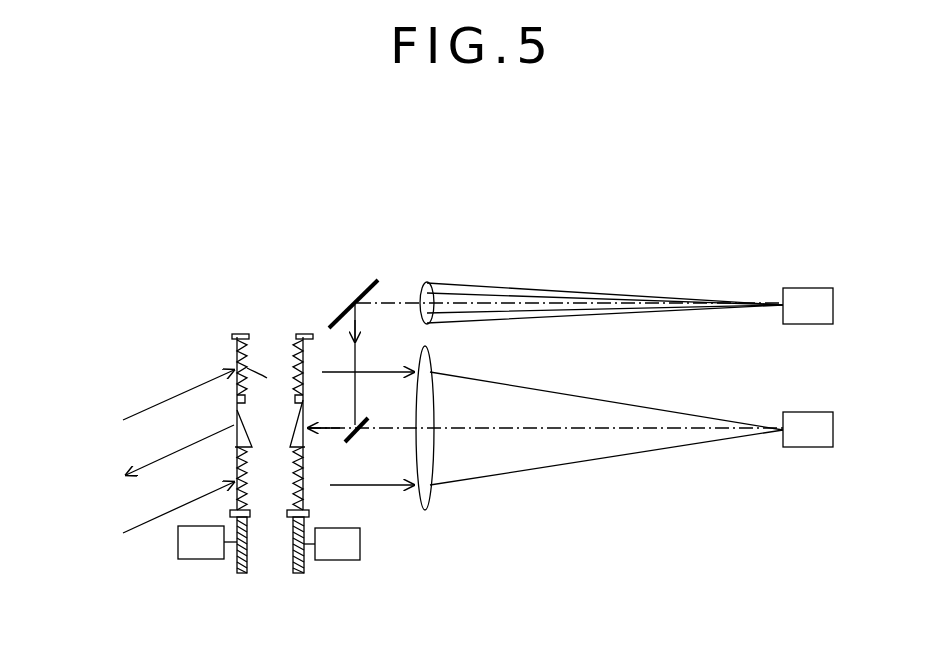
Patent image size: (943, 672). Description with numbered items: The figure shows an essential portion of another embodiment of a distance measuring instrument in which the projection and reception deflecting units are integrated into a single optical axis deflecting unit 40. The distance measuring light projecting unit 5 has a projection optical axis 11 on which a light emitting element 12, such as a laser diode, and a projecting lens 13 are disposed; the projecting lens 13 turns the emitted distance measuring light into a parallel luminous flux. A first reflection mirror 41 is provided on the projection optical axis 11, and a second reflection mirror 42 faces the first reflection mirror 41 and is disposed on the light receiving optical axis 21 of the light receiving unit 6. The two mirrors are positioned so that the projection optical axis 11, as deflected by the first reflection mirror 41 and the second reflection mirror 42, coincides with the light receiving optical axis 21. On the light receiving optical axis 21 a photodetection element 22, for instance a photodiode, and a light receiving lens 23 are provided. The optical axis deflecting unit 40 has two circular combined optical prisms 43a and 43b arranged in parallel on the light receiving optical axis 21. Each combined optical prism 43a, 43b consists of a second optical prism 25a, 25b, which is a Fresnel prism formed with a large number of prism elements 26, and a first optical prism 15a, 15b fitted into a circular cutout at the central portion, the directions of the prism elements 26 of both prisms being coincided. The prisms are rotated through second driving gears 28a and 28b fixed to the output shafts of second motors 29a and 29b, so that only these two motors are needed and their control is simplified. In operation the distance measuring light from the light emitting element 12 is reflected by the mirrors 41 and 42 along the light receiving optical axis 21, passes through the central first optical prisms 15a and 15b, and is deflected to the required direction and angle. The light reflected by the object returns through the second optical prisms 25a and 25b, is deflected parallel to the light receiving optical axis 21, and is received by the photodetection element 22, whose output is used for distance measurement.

The distance measuring light projecting unit 5 is at (645, 290).
The light receiving unit 6 is at (620, 396).
The projection optical axis 11 is at (527, 300).
The light emitting element 12 is at (797, 288).
The projecting lens 13 is at (428, 282).
The first optical prism 15a is at (234, 410).
The first optical prism 15b is at (287, 430).
The light receiving optical axis 21 is at (568, 430).
The photodetection element 22 is at (800, 412).
The light receiving lens 23 is at (432, 500).
The second optical prism 25a is at (232, 338).
The second optical prism 25b is at (307, 362).
The prism element 26 is at (271, 392).
The second driving gear 28a is at (241, 575).
The second driving gear 28b is at (300, 576).
The second motor 29a is at (196, 560).
The second motor 29b is at (340, 561).
The optical axis deflecting unit 40 is at (268, 316).
The first reflection mirror 41 is at (364, 283).
The second reflection mirror 42 is at (354, 440).
The combined optical prism 43a is at (233, 465).
The combined optical prism 43b is at (306, 490).